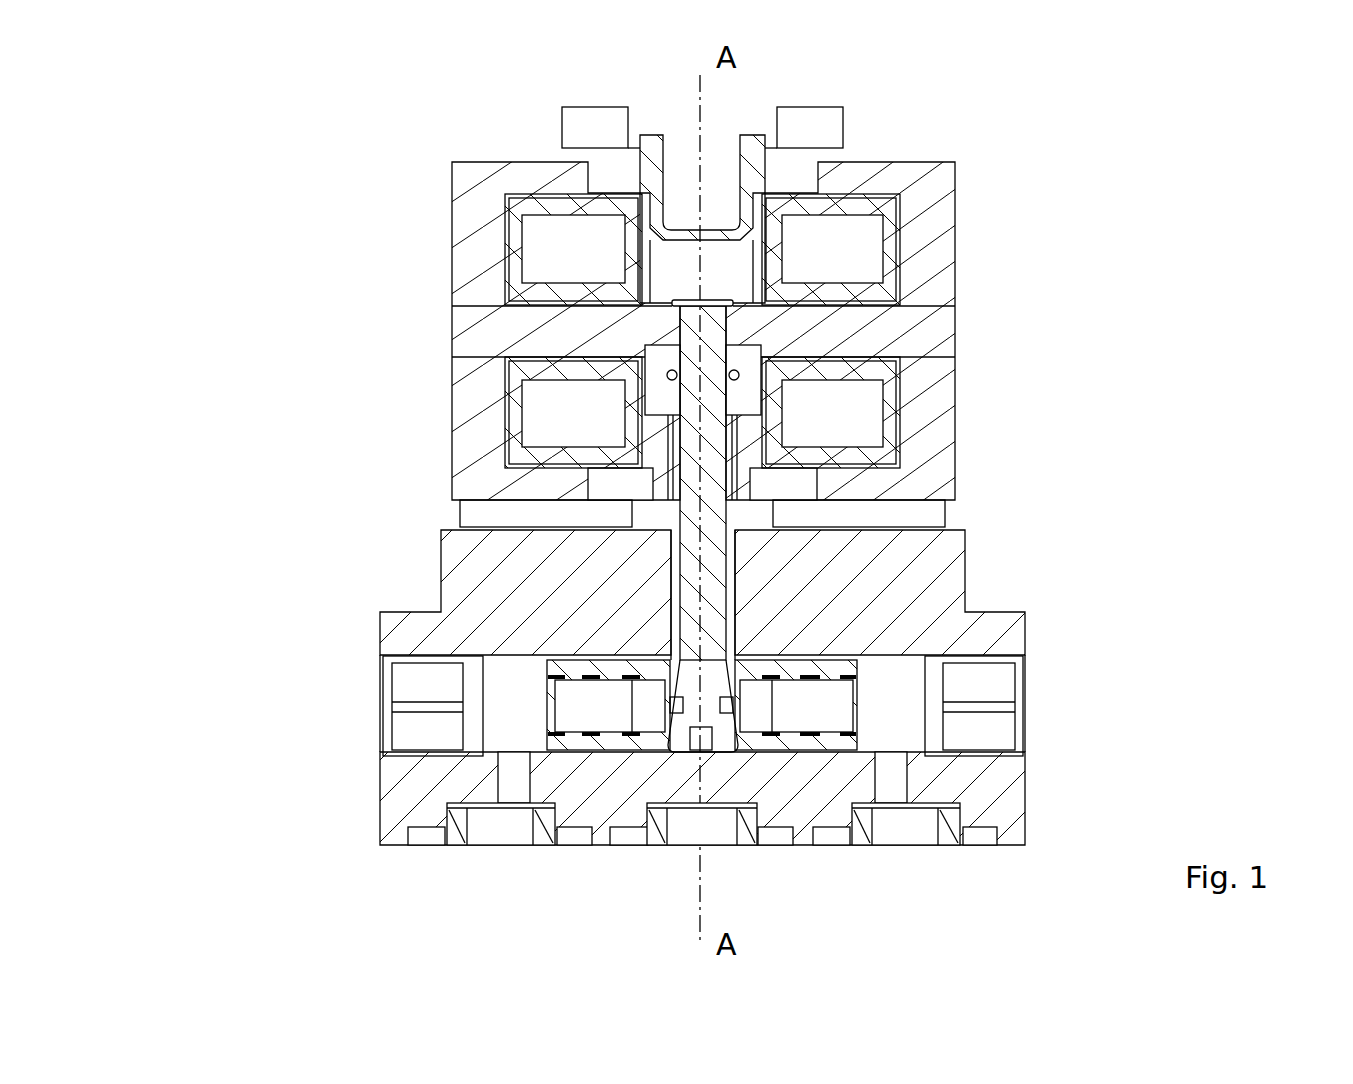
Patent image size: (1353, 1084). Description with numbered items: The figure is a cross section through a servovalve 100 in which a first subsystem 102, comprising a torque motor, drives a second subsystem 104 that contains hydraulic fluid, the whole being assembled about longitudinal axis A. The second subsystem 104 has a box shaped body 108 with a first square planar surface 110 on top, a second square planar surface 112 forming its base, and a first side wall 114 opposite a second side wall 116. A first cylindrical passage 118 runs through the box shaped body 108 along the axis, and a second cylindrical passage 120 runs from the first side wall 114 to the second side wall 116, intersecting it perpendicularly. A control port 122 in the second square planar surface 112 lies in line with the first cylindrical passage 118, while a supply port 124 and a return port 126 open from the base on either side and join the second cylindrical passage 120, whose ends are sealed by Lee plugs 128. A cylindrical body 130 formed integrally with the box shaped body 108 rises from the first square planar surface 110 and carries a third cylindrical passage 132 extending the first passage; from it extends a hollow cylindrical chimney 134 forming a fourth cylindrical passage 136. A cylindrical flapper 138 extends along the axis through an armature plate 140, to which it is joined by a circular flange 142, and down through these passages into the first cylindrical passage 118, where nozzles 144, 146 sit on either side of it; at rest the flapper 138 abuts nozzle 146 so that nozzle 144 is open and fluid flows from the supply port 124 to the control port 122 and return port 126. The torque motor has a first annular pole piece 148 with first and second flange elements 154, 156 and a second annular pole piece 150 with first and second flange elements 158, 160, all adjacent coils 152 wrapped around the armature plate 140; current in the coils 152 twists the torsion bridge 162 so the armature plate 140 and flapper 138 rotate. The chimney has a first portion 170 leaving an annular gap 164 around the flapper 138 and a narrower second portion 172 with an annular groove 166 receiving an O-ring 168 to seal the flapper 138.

The servovalve 100 is at (1200, 560).
The first subsystem 102 is at (997, 390).
The second subsystem 104 is at (1072, 690).
The box shaped body 108 is at (388, 638).
The first square planar surface 110 is at (437, 605).
The second square planar surface 112 is at (1005, 848).
The first side wall 114 is at (375, 790).
The second side wall 116 is at (1010, 822).
The first cylindrical passage 118 is at (683, 775).
The second cylindrical passage 120 is at (495, 692).
The control port 122 is at (722, 848).
The supply port 124 is at (511, 838).
The return port 126 is at (912, 845).
The Lee plugs 128 is at (400, 750).
The cylindrical body 130 is at (1005, 578).
The third cylindrical passage 132 is at (730, 583).
The hollow cylindrical chimney 134 is at (750, 468).
The fourth cylindrical passage 136 is at (673, 473).
The flapper 138 is at (738, 326).
The armature plate 140 is at (733, 383).
The circular flange 142 is at (935, 270).
The nozzle 144 is at (583, 728).
The nozzle 146 is at (793, 735).
The first annular pole piece 148 is at (902, 168).
The second annular pole piece 150 is at (508, 485).
The coils 152 is at (512, 240).
The first flange element 154 is at (488, 215).
The second flange element 156 is at (955, 265).
The first flange element 158 is at (460, 441).
The second flange element 160 is at (948, 452).
The torsion bridge 162 is at (640, 367).
The annular gap 164 is at (893, 430).
The annular groove 166 is at (790, 380).
The O-ring 168 is at (737, 368).
The first portion 170 is at (653, 430).
The second portion 172 is at (653, 387).